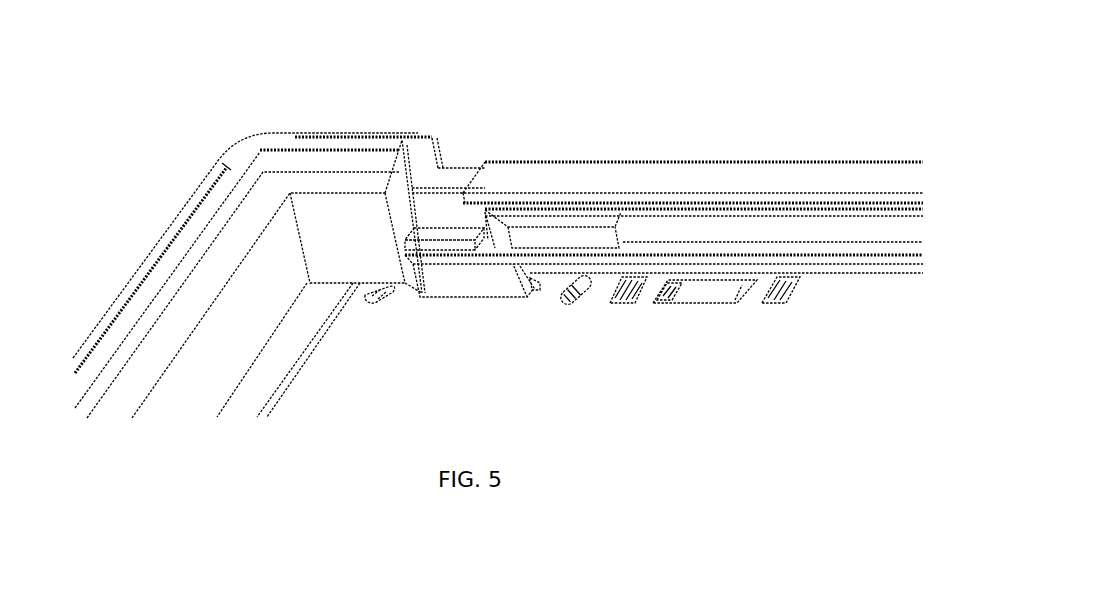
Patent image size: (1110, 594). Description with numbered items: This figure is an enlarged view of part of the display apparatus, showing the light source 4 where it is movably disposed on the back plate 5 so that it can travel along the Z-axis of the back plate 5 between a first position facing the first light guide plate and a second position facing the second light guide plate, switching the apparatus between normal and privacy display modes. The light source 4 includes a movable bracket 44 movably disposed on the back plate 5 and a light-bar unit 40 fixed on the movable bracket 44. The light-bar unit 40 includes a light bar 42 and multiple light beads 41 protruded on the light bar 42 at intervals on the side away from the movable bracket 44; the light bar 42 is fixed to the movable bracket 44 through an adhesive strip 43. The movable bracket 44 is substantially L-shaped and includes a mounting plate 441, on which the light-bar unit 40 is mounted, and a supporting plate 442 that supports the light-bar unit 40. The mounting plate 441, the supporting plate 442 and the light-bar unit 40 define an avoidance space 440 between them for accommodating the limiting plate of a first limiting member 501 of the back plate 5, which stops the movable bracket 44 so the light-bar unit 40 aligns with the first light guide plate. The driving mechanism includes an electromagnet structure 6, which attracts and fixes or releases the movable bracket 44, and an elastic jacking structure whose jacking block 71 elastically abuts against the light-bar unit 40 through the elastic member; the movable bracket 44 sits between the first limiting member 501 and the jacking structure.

The light source 4 is at (664, 130).
The back plate 5 is at (185, 212).
The first limiting member 501 is at (393, 300).
The electromagnet structure 6 is at (702, 293).
The light-bar unit 40 is at (704, 159).
The light beads 41 is at (572, 227).
The light bar 42 is at (652, 227).
The adhesive strip 43 is at (689, 210).
The movable bracket 44 is at (482, 160).
The avoidance space 440 is at (427, 207).
The mounting plate 441 is at (445, 215).
The supporting plate 442 is at (495, 250).
The jacking block 71 is at (492, 288).